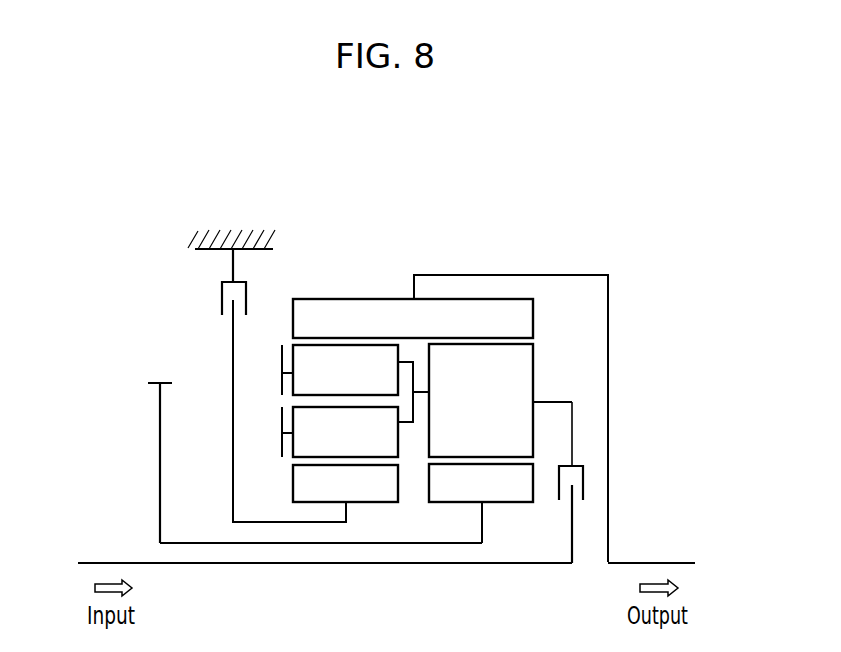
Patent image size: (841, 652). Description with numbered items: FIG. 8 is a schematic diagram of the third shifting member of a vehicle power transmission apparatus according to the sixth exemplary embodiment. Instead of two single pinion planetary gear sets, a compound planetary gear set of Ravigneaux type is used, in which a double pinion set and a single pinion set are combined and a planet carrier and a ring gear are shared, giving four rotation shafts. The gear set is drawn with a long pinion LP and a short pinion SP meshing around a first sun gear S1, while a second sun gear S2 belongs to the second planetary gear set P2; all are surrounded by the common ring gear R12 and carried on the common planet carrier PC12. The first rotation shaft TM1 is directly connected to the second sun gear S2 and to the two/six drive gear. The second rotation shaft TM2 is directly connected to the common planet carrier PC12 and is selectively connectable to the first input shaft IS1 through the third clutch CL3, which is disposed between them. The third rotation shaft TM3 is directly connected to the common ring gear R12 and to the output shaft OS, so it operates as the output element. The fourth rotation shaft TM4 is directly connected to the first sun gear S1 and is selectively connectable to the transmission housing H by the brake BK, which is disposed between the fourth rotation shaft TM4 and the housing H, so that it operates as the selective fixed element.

The transmission housing H is at (212, 232).
The brake BK is at (266, 272).
The third rotation shaft TM3 is at (446, 258).
The common ring gear R12 is at (413, 318).
The long pinion LP is at (355, 383).
The short pinion SP is at (340, 432).
The first sun gear S1 is at (315, 411).
The second planetary gear set P2 is at (481, 400).
The second sun gear S2 is at (481, 503).
The common planet carrier PC12 is at (552, 401).
The second rotation shaft TM2 is at (588, 399).
The third clutch CL3 is at (600, 465).
The fourth rotation shaft TM4 is at (291, 550).
The first input shaft IS1 is at (111, 562).
The first rotation shaft TM1 is at (436, 564).
The output shaft OS is at (657, 562).